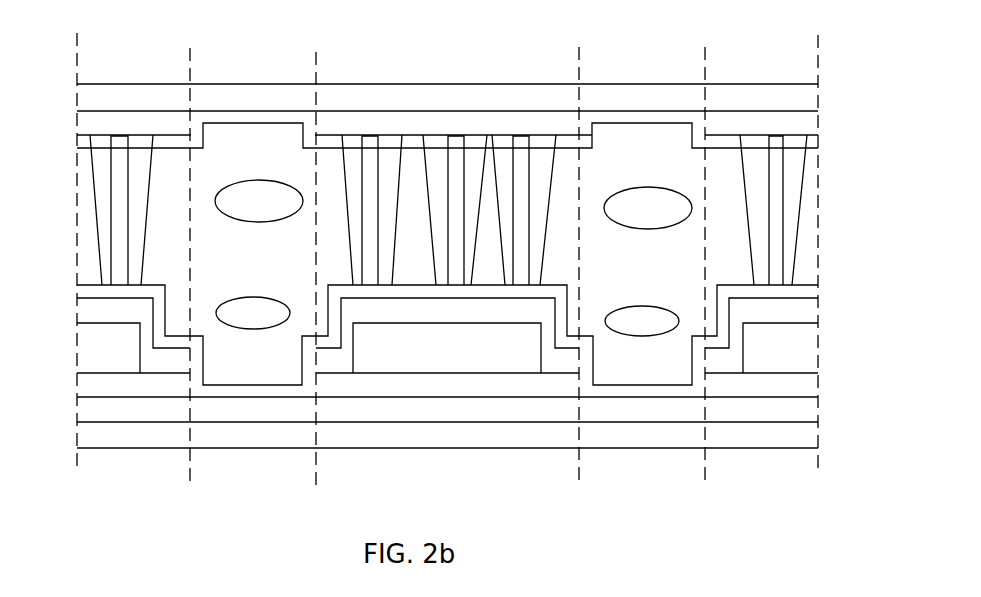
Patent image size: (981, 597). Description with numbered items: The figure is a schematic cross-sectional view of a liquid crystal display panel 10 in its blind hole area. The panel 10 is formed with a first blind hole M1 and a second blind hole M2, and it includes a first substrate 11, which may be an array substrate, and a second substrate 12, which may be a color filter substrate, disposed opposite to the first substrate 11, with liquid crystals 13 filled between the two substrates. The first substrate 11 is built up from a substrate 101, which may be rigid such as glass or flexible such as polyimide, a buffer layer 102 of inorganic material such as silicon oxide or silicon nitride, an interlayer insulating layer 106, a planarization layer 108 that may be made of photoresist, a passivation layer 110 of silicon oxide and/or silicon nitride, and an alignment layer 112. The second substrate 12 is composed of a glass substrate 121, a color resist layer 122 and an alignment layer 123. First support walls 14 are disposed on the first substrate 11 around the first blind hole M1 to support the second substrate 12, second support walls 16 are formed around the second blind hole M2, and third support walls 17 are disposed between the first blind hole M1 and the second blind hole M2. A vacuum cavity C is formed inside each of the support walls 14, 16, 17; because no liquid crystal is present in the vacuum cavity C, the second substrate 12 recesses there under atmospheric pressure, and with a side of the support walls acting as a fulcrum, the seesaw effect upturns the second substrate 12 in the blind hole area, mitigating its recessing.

The liquid crystal display panel 10 is at (119, 50).
The first substrate 11 is at (508, 360).
The second substrate 12 is at (507, 117).
The glass substrate 121 is at (805, 101).
The color resist layer 122 is at (808, 126).
The alignment layer 123 is at (810, 141).
The liquid crystals 13 is at (647, 213).
The first support walls 14 is at (108, 206).
The second support walls 16 is at (538, 180).
The third support walls 17 is at (469, 152).
The substrate 101 is at (797, 443).
The buffer layer 102 is at (797, 409).
The interlayer insulating layer 106 is at (802, 386).
The planarization layer 108 is at (800, 351).
The passivation layer 110 is at (802, 316).
The alignment layer 112 is at (802, 296).
The vacuum cavity C is at (122, 275).
The first blind hole M1 is at (316, 60).
The second blind hole M2 is at (705, 75).